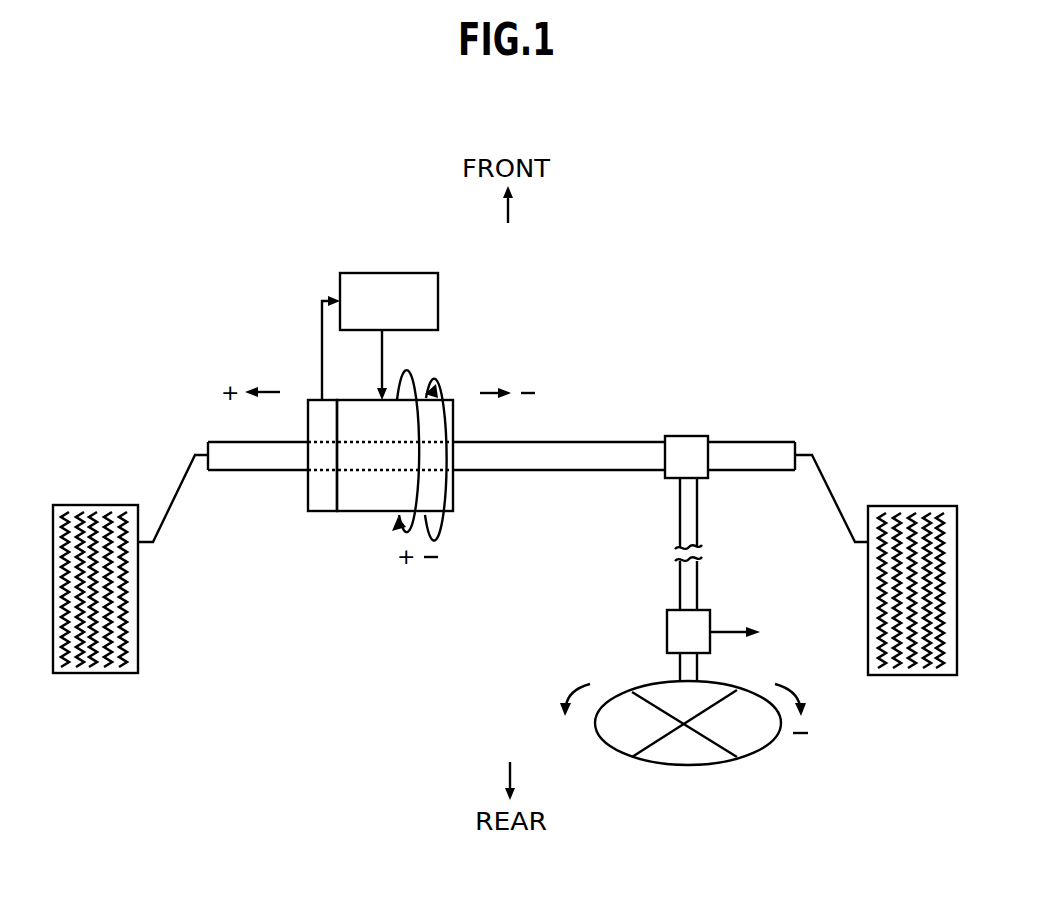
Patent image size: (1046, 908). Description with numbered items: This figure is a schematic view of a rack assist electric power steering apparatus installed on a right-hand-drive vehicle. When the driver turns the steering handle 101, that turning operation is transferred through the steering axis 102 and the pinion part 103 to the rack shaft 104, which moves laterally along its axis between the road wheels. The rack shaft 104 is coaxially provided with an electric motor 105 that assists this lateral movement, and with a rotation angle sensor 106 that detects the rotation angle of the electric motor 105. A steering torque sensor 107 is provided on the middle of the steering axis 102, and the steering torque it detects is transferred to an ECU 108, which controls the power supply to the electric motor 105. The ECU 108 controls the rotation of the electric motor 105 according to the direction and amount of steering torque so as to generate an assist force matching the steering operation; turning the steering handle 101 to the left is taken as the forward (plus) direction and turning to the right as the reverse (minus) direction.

The steering handle 101 is at (690, 768).
The steering axis 102 is at (729, 513).
The pinion part 103 is at (714, 419).
The rack shaft 104 is at (572, 473).
The electric motor 105 is at (380, 513).
The rotation angle sensor 106 is at (325, 513).
The steering torque sensor 107 is at (669, 644).
The ECU 108 is at (430, 258).